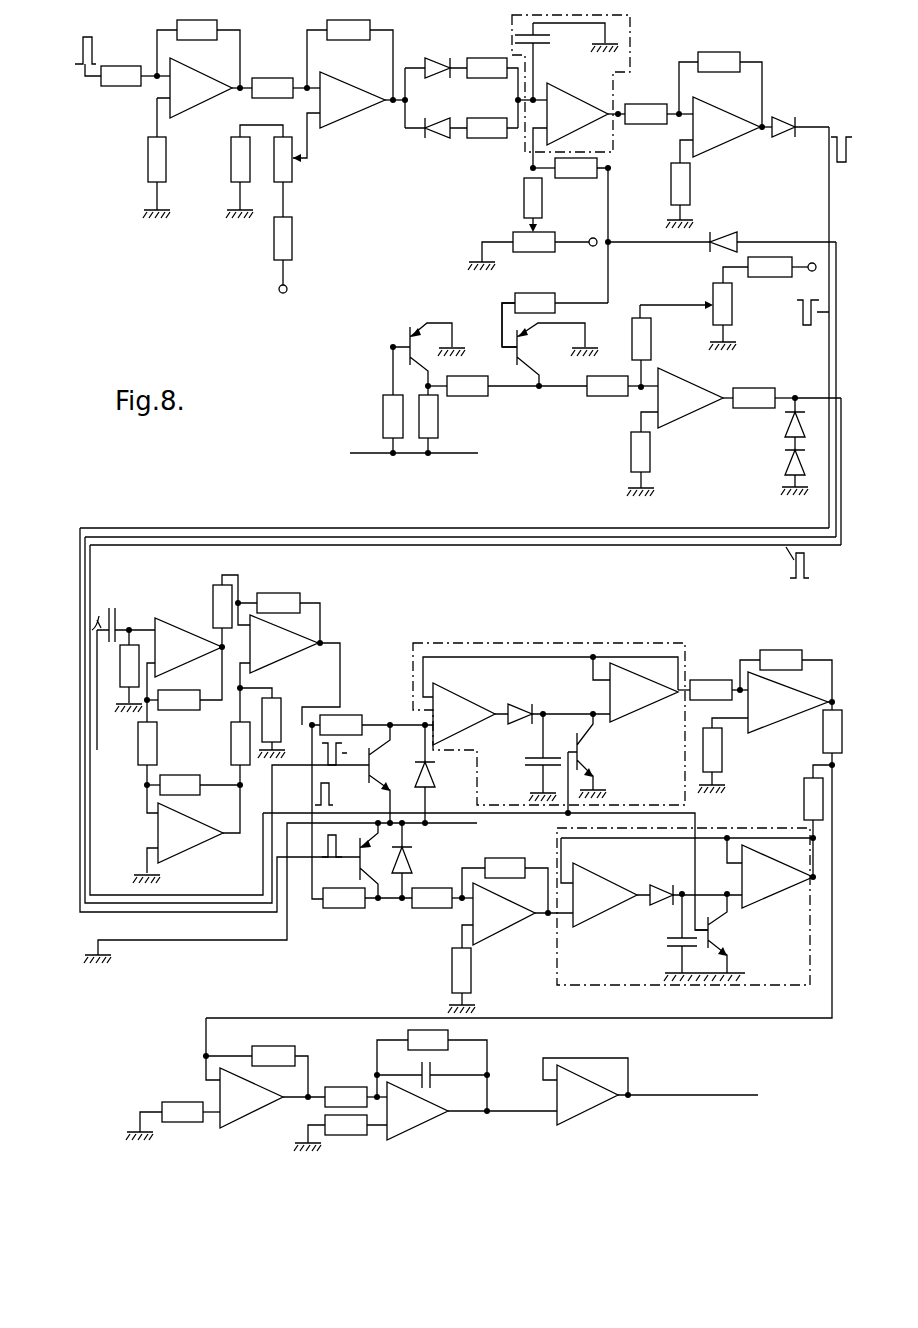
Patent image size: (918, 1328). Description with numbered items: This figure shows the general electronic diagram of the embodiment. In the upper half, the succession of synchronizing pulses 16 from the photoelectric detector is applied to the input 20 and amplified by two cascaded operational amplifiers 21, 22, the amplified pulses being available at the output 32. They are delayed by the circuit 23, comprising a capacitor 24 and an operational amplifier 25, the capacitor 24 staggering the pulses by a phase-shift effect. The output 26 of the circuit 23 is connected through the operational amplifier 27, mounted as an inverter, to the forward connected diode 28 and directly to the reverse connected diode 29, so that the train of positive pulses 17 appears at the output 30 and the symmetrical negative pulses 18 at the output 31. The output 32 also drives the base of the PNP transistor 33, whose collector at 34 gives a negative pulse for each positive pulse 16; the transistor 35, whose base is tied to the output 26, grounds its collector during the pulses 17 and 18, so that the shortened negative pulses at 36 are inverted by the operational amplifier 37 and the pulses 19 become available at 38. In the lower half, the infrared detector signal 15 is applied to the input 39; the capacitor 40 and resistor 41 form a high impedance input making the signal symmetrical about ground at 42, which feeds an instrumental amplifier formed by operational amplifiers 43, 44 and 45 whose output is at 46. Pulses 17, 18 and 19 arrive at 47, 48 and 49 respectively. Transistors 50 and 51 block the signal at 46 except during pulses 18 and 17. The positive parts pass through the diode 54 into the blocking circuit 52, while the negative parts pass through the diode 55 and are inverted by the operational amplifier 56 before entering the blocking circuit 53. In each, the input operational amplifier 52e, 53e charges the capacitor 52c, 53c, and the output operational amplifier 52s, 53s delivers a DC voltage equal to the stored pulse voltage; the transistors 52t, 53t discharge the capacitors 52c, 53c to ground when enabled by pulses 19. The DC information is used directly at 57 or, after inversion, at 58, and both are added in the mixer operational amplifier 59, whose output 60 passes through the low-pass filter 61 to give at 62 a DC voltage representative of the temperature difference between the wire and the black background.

The signal 15 is at (98, 610).
The electric pulse 16 is at (92, 55).
The positive pulse 17 is at (342, 846).
The negative pulse 18 is at (575, 536).
The pulse 19 is at (808, 565).
The input 20 is at (85, 77).
The operational amplifier 21 is at (197, 83).
The operational amplifier 22 is at (342, 115).
The delay circuit 23 is at (630, 20).
The capacitor 24 is at (515, 38).
The operational amplifier 25 is at (560, 125).
The output 26 is at (622, 118).
The operational amplifier 27 is at (719, 130).
The forward connected diode 28 is at (783, 125).
The reverse connected diode 29 is at (735, 237).
The output 30 is at (826, 125).
The output 31 is at (832, 242).
The output 32 is at (393, 102).
The transistor 33 is at (408, 340).
The collector output 34 is at (427, 385).
The transistor 35 is at (517, 357).
The output 36 is at (540, 388).
The operational amplifier 37 is at (685, 402).
The output 38 is at (840, 396).
The input 39 is at (108, 704).
The capacitor 40 is at (113, 608).
The resistor 41 is at (133, 675).
The symmetrical signal point 42 is at (140, 628).
The operational amplifier 43 is at (193, 645).
The operational amplifier 44 is at (193, 840).
The operational amplifier 45 is at (284, 641).
The output 46 is at (356, 664).
The input 47 is at (280, 893).
The input 48 is at (227, 720).
The input 49 is at (347, 814).
The transistor 50 is at (372, 750).
The transistor 51 is at (361, 878).
The blocking circuit 52 is at (546, 642).
The input operational amplifier 52e is at (462, 715).
The output operational amplifier 52s is at (630, 688).
The capacitor 52c is at (529, 762).
The transistor 52t is at (580, 750).
The blocking circuit 53 is at (752, 990).
The input operational amplifier 53e is at (598, 897).
The output operational amplifier 53s is at (765, 882).
The capacitor 53c is at (672, 942).
The transistor 53t is at (710, 928).
The diode 54 is at (432, 780).
The diode 55 is at (410, 853).
The operational amplifier 56 is at (490, 920).
The output 57 is at (813, 877).
The output 58 is at (830, 702).
The operational amplifier 59 is at (770, 705).
The output 60 is at (293, 1098).
The low-pass filter 61 is at (458, 1090).
The output 62 is at (695, 1096).